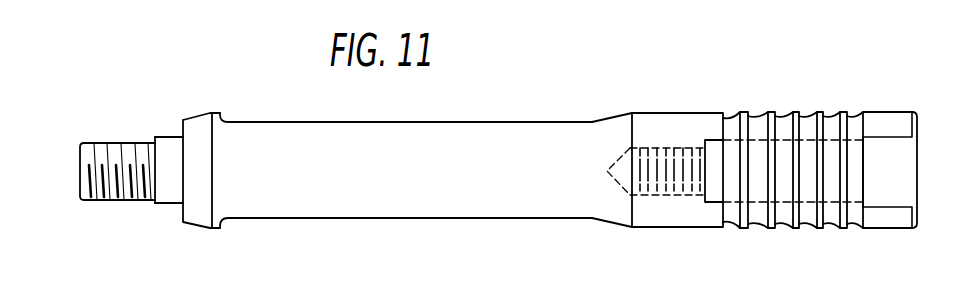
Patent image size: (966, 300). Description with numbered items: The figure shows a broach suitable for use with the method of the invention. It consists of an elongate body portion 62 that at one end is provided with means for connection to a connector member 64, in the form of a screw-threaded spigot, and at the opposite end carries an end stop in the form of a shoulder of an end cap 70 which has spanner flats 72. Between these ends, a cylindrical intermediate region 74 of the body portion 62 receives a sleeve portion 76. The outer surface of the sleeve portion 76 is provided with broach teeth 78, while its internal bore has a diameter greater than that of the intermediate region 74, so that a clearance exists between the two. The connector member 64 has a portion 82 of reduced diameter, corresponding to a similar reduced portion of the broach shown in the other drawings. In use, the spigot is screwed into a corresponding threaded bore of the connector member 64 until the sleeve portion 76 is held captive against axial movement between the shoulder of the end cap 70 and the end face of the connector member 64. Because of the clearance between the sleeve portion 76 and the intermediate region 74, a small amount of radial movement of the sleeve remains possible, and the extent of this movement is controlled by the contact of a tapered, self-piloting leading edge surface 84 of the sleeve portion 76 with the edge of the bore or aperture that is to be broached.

The elongate body portion 62 is at (757, 157).
The connector member 64 is at (675, 122).
The end cap 70 is at (888, 122).
The spanner flats 72 is at (900, 165).
The cylindrical intermediate region 74 is at (757, 228).
The sleeve portion 76 is at (657, 200).
The broach teeth 78 is at (797, 118).
The portion having a reduced diameter 82 is at (427, 122).
The tapered self-piloting leading edge surface 84 is at (733, 221).